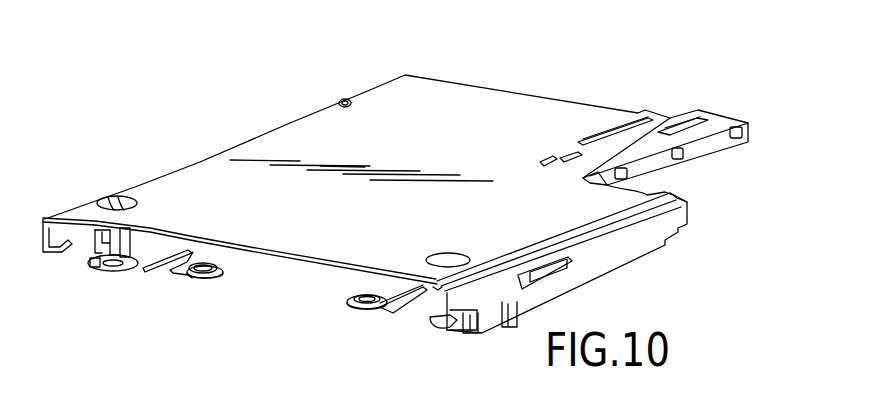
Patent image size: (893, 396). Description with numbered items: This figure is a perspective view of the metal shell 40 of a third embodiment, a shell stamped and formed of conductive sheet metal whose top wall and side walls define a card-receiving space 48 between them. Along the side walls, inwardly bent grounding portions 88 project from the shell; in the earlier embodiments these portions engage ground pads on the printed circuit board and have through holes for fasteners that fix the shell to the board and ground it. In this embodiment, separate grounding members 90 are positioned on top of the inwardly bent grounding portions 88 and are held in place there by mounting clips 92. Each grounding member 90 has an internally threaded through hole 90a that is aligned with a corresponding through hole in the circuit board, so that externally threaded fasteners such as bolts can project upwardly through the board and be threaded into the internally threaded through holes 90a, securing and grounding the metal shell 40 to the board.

The metal shell 40 is at (533, 92).
The card-receiving space 48 is at (285, 265).
The grounding portions 88 is at (117, 270).
The grounding members 90 is at (178, 280).
The internally threaded through holes 90a is at (213, 263).
The mounting clips 92 is at (110, 247).